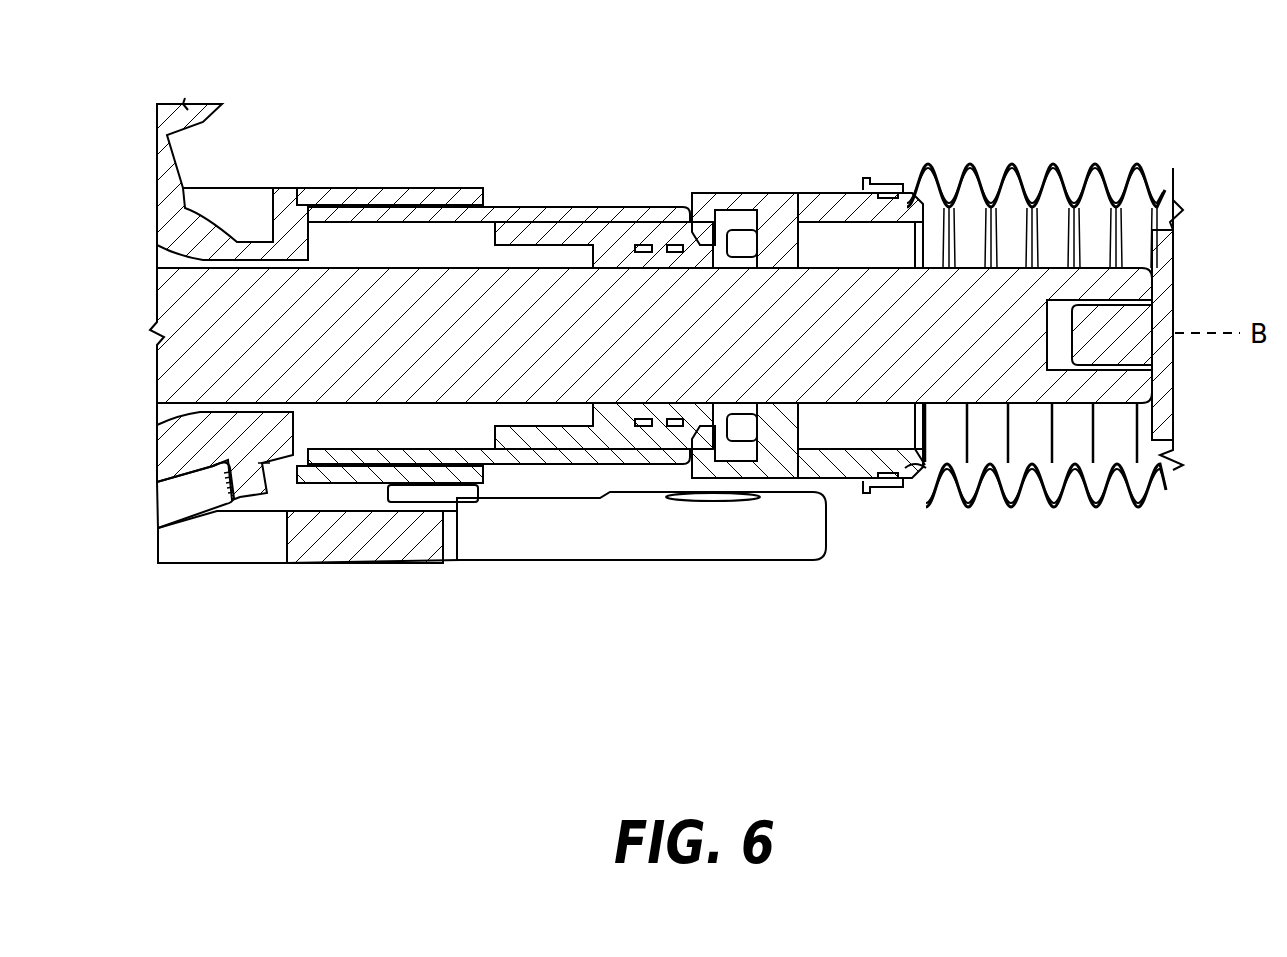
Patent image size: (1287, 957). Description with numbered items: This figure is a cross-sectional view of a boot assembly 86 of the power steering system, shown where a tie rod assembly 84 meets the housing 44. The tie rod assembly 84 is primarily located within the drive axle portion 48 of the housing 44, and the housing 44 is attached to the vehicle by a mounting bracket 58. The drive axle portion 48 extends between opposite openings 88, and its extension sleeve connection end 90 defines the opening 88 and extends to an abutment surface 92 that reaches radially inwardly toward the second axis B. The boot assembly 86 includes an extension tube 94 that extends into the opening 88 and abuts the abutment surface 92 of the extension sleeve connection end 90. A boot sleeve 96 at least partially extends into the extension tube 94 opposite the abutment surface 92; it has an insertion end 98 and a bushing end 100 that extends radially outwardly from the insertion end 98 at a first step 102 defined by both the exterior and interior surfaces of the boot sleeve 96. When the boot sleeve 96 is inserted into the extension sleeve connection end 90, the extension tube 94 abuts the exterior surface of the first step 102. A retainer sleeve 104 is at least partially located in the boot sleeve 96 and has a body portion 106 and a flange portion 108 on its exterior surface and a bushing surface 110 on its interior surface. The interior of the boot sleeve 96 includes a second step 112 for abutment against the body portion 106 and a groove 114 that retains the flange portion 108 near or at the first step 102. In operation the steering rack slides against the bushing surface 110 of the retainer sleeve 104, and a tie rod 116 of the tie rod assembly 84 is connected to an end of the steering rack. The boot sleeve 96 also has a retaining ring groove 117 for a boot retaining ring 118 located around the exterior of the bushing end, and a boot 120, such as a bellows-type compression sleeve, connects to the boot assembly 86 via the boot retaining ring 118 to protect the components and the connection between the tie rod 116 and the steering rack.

The housing 44 is at (226, 108).
The drive axle portion 48 is at (300, 187).
The mounting bracket 58 is at (610, 545).
The tie rod assembly 84 is at (1180, 172).
The boot assembly 86 is at (811, 137).
The opening 88 is at (427, 457).
The extension sleeve connection end 90 is at (383, 195).
The abutment surface 92 is at (309, 240).
The extension tube 94 is at (565, 203).
The boot sleeve 96 is at (836, 190).
The insertion end 98 is at (613, 240).
The bushing end 100 is at (911, 187).
The first step 102 is at (708, 207).
The retainer sleeve 104 is at (742, 242).
The body portion 106 is at (603, 262).
The flange portion 108 is at (770, 263).
The bushing surface 110 is at (646, 262).
The second step 112 is at (608, 255).
The groove 114 is at (737, 462).
The tie rod 116 is at (1163, 309).
The retaining ring groove 117 is at (913, 471).
The boot retaining ring 118 is at (900, 484).
The boot 120 is at (1020, 207).